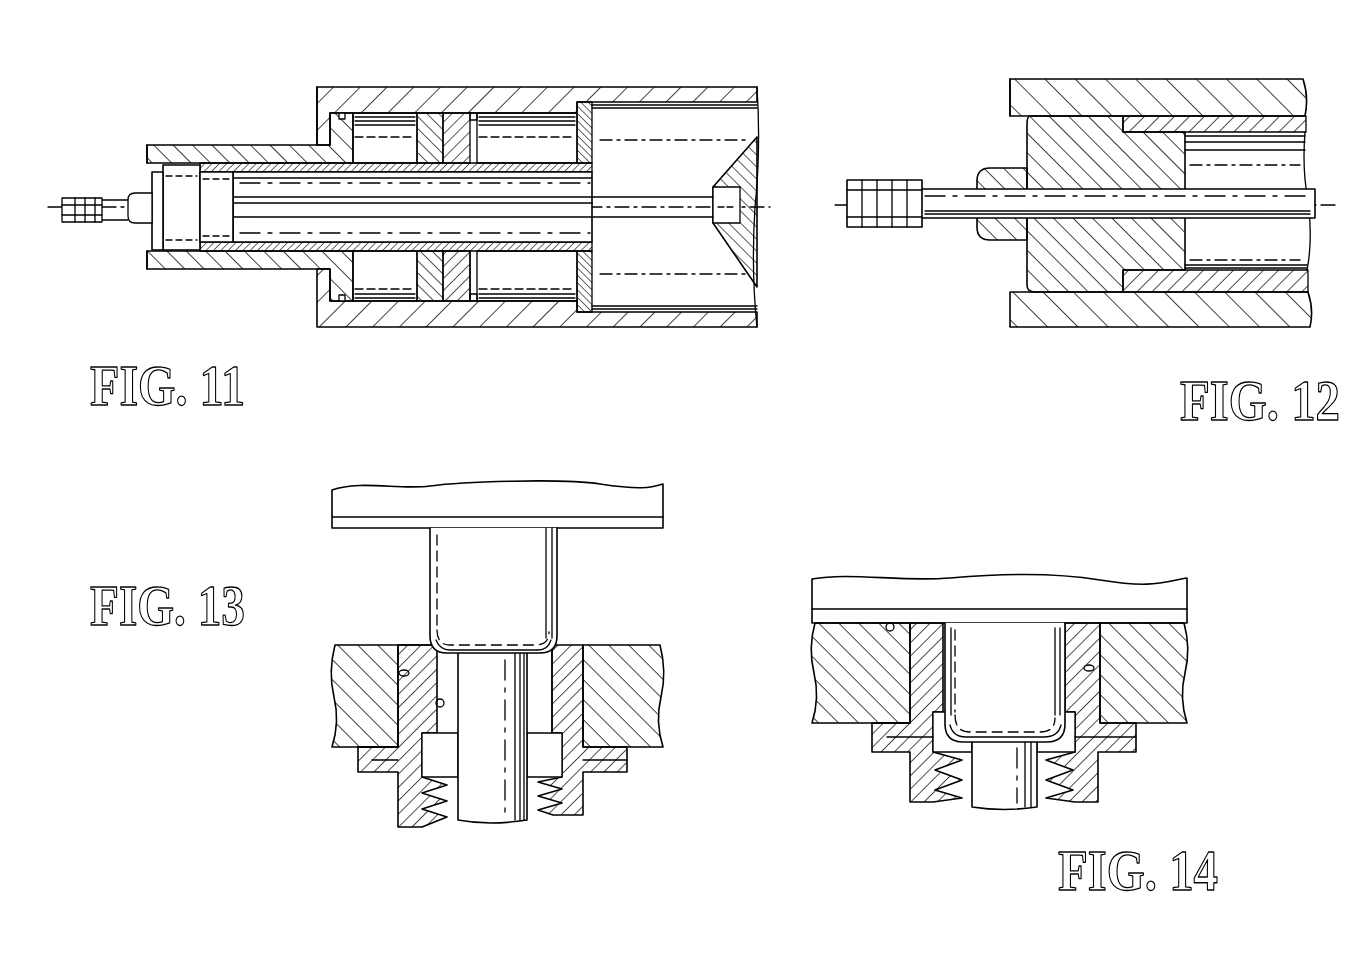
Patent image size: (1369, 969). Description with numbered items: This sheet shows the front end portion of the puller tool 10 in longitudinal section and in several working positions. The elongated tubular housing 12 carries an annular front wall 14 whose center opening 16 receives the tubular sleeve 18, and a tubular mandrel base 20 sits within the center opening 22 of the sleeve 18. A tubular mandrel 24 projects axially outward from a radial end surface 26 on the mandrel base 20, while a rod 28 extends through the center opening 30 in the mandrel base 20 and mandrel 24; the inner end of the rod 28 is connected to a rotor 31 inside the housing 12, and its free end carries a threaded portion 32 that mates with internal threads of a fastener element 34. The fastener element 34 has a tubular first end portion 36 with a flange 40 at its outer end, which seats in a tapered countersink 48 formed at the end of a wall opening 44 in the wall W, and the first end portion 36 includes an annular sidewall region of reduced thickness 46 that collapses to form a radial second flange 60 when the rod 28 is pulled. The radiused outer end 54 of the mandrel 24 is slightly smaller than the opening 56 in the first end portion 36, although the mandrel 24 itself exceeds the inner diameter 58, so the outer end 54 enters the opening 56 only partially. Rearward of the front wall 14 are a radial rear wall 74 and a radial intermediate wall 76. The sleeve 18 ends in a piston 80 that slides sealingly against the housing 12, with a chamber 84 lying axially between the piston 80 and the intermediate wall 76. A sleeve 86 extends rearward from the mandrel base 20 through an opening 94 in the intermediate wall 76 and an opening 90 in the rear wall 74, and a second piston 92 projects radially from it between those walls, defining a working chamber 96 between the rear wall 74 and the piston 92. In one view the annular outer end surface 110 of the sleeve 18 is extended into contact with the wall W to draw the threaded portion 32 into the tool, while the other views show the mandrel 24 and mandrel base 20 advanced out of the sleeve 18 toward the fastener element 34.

In FIG. 11, the puller tool 10 is at (409, 228).
In FIG. 12, the puller tool 10 is at (1092, 238).
In FIG. 13, the puller tool 10 is at (487, 636).
In FIG. 14, the puller tool 10 is at (995, 666).
In FIG. 11, the tubular housing 12 is at (488, 88).
In FIG. 11, the annular front wall 14 is at (316, 103).
In FIG. 11, the center opening 16 is at (320, 135).
In FIG. 11, the tubular sleeve 18 is at (212, 257).
In FIG. 12, the tubular sleeve 18 is at (1213, 93).
In FIG. 11, the mandrel base 20 is at (177, 177).
In FIG. 12, the mandrel base 20 is at (1098, 123).
In FIG. 13, the mandrel base 20 is at (477, 513).
In FIG. 14, the mandrel base 20 is at (1138, 595).
In FIG. 11, the center opening 22 is at (151, 170).
In FIG. 12, the center opening 22 is at (1027, 285).
In FIG. 11, the mandrel 24 is at (138, 228).
In FIG. 12, the mandrel 24 is at (990, 177).
In FIG. 13, the mandrel 24 is at (526, 590).
In FIG. 14, the mandrel 24 is at (985, 700).
In FIG. 13, the radial end surface 26 is at (352, 528).
In FIG. 11, the rod 28 is at (300, 230).
In FIG. 12, the rod 28 is at (1295, 197).
In FIG. 13, the rod 28 is at (480, 803).
In FIG. 14, the rod 28 is at (1003, 797).
In FIG. 12, the center opening 30 is at (1075, 193).
In FIG. 11, the rotor 31 is at (757, 205).
In FIG. 11, the threaded portion 32 is at (83, 212).
In FIG. 12, the threaded portion 32 is at (885, 213).
In FIG. 13, the fastener element 34 is at (600, 801).
In FIG. 14, the fastener element 34 is at (1120, 782).
In FIG. 13, the first end portion 36 is at (360, 750).
In FIG. 14, the first end portion 36 is at (917, 662).
In FIG. 13, the flange 40 is at (487, 712).
In FIG. 14, the flange 40 is at (995, 674).
In FIG. 13, the wall opening 44 is at (404, 673).
In FIG. 14, the wall opening 44 is at (1089, 668).
In FIG. 13, the annular sidewall region of reduced thickness 46 is at (412, 646).
In FIG. 14, the tapered countersink 48 is at (903, 630).
In FIG. 13, the outer end 54 is at (555, 633).
In FIG. 14, the outer end 54 is at (948, 738).
In FIG. 13, the opening 56 is at (543, 715).
In FIG. 13, the inner diameter 58 is at (440, 703).
In FIG. 14, the inner diameter 58 is at (953, 687).
In FIG. 13, the radial second flange 60 is at (380, 760).
In FIG. 14, the radial second flange 60 is at (882, 747).
In FIG. 11, the radial rear wall 74 is at (594, 130).
In FIG. 11, the radial intermediate wall 76 is at (420, 280).
In FIG. 11, the piston 80 is at (367, 285).
In FIG. 11, the chamber 84 is at (386, 122).
In FIG. 11, the sleeve 86 is at (246, 165).
In FIG. 11, the opening 90 is at (593, 243).
In FIG. 11, the second piston 92 is at (508, 135).
In FIG. 11, the opening 94 is at (428, 178).
In FIG. 11, the working chamber 96 is at (487, 290).
In FIG. 11, the annular outer end surface 110 is at (148, 262).
In FIG. 12, the annular outer end surface 110 is at (1010, 95).
In FIG. 13, the wall W is at (632, 652).